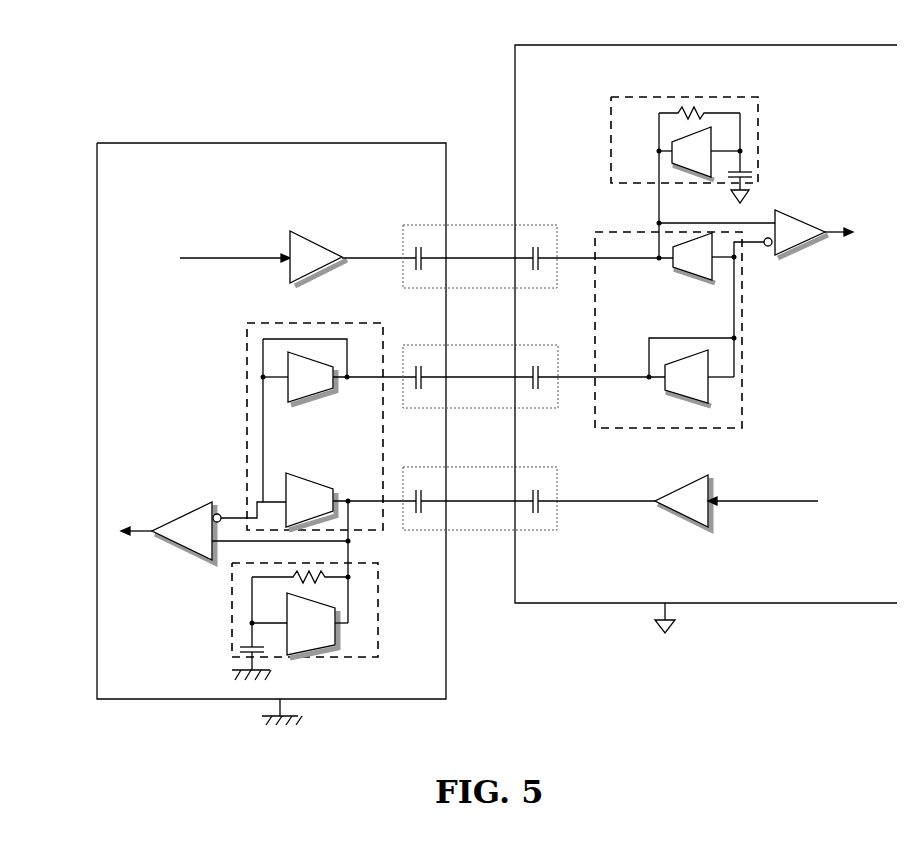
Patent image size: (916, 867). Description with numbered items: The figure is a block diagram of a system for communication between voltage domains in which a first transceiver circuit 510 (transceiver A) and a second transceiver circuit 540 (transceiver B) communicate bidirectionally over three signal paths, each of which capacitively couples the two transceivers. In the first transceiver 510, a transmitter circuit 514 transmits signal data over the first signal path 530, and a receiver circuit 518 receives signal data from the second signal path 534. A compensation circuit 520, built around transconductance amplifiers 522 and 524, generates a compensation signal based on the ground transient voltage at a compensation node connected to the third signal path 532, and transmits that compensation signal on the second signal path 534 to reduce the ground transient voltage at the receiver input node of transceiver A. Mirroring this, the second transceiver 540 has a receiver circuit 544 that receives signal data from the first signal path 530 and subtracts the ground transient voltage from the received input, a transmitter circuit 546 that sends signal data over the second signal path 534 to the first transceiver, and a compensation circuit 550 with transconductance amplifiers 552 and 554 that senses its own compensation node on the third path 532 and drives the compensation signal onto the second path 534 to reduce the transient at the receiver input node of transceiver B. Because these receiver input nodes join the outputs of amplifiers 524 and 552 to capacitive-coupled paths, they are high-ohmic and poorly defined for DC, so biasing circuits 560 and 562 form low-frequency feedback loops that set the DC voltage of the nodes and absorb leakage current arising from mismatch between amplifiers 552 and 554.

The first transceiver circuit 510 is at (265, 180).
The transmitter circuit 514 is at (291, 286).
The receiver circuit 518 is at (183, 514).
The compensation circuit 520 is at (247, 340).
The transconductance amplifier 522 is at (318, 403).
The transconductance amplifier 524 is at (305, 473).
The first signal path 530 is at (485, 225).
The third signal path 532 is at (487, 345).
The second signal path 534 is at (487, 467).
The second transceiver circuit 540 is at (708, 69).
The receiver circuit 544 is at (797, 246).
The transmitter circuit 546 is at (682, 483).
The compensation circuit 550 is at (620, 430).
The transconductance amplifier 552 is at (688, 281).
The transconductance amplifier 554 is at (688, 404).
The biasing circuit 560 is at (381, 648).
The biasing circuit 562 is at (610, 102).